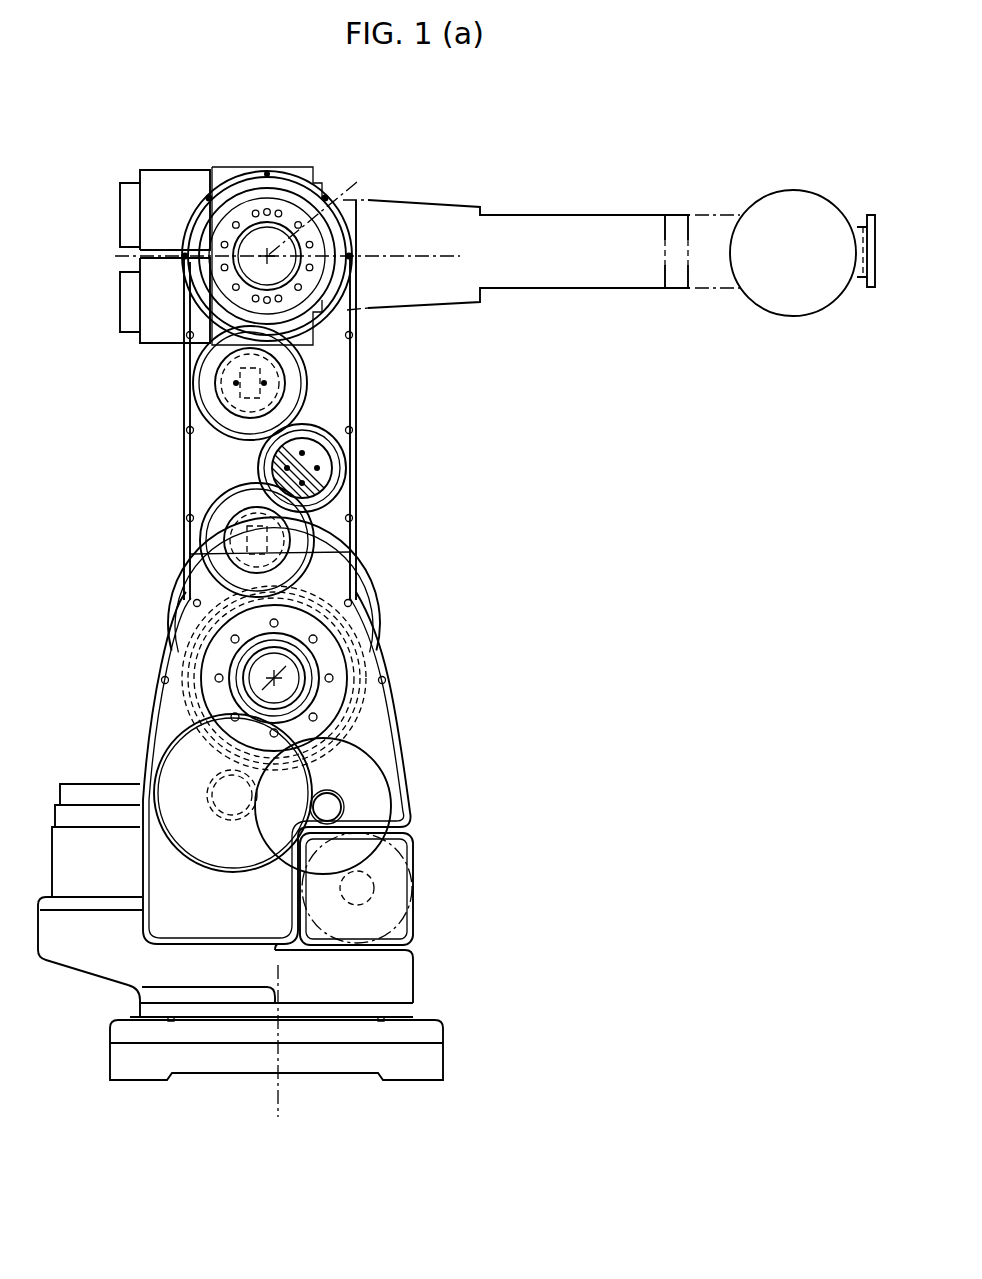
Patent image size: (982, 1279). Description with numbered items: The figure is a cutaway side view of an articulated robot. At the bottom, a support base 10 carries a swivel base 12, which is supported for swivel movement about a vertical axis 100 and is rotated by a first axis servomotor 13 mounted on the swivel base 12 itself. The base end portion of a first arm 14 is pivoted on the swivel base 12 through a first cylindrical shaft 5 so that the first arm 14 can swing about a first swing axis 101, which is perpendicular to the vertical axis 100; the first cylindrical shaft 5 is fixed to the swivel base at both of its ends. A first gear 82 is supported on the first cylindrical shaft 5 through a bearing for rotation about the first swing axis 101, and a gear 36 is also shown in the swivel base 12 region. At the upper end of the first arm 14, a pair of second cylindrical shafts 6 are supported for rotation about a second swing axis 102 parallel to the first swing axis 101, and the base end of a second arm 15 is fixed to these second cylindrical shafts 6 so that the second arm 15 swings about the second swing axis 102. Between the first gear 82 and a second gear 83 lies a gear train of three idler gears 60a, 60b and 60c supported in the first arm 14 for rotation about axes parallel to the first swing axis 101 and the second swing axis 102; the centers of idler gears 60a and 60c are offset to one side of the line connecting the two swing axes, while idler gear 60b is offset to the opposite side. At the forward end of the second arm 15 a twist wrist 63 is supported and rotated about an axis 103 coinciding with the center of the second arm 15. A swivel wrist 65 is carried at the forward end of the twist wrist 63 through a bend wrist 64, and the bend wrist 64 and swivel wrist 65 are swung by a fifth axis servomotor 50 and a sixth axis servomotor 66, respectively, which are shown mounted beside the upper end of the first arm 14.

The first cylindrical shaft 5 is at (287, 687).
The second cylindrical shafts 6 is at (265, 236).
The support base 10 is at (427, 1050).
The swivel base 12 is at (380, 733).
The first axis servomotor 13 is at (90, 832).
The first arm 14 is at (209, 473).
The second arm 15 is at (420, 285).
The gear 36 is at (374, 798).
The fifth axis servomotor 50 is at (158, 345).
The idler gear 60a is at (296, 391).
The idler gear 60b is at (336, 458).
The idler gear 60c is at (294, 541).
The twist wrist 63 is at (533, 227).
The bend wrist 64 is at (777, 293).
The swivel wrist 65 is at (876, 216).
The sixth axis servomotor 66 is at (160, 200).
The first gear 82 is at (212, 658).
The second gear 83 is at (232, 180).
The vertical axis 100 is at (278, 1100).
The first swing axis 101 is at (278, 677).
The second swing axis 102 is at (357, 182).
The axis 103 is at (410, 256).